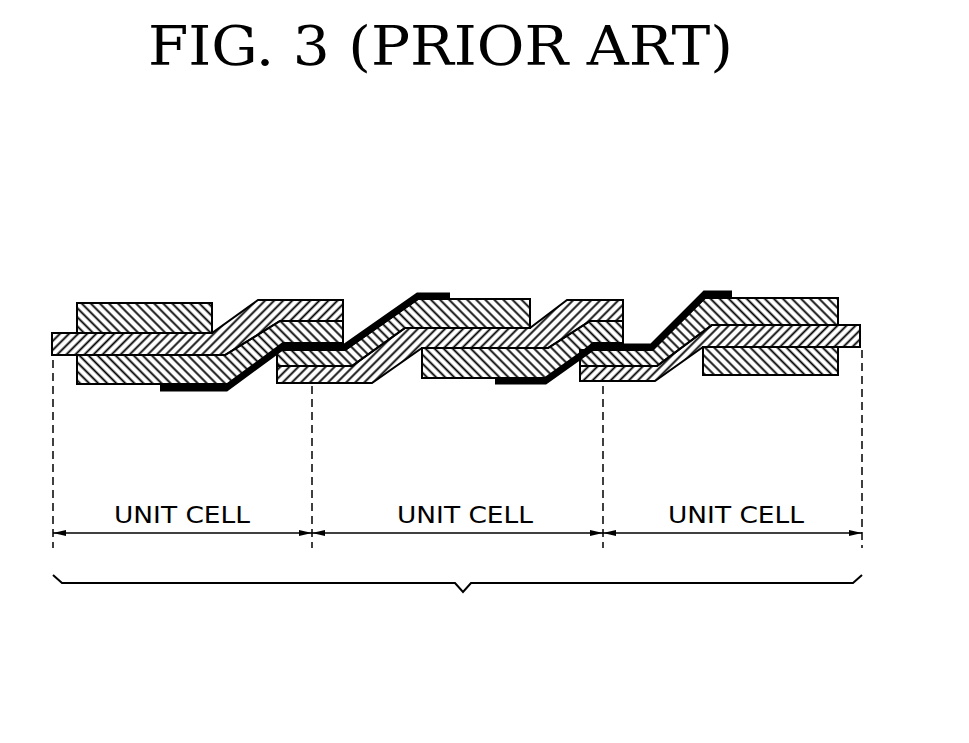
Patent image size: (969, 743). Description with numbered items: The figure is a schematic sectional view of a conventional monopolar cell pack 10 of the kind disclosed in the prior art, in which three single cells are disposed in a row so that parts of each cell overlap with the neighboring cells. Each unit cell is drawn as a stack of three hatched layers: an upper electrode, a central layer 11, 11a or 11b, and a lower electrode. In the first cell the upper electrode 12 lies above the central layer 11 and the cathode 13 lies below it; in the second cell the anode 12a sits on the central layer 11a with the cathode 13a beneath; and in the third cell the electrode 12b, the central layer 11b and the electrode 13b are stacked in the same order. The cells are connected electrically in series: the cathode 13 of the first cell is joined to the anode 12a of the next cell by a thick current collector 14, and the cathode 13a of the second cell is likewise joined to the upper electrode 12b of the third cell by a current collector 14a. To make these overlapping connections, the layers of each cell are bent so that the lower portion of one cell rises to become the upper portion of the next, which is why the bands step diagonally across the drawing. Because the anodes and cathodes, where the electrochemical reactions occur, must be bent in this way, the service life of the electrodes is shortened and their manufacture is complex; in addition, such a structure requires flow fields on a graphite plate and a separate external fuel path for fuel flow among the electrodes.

The cell pack 10 is at (457, 604).
The electrolyte membrane 11 is at (299, 300).
The anode 12 is at (143, 303).
The cathode 13 is at (112, 385).
The current collector 14 is at (240, 377).
The electrolyte membrane 11a is at (619, 300).
The anode 12a is at (493, 299).
The cathode 13a is at (448, 378).
The current collector 14a is at (547, 379).
The electrolyte membrane 11b is at (854, 325).
The anode 12b is at (762, 298).
The cathode 13b is at (765, 375).